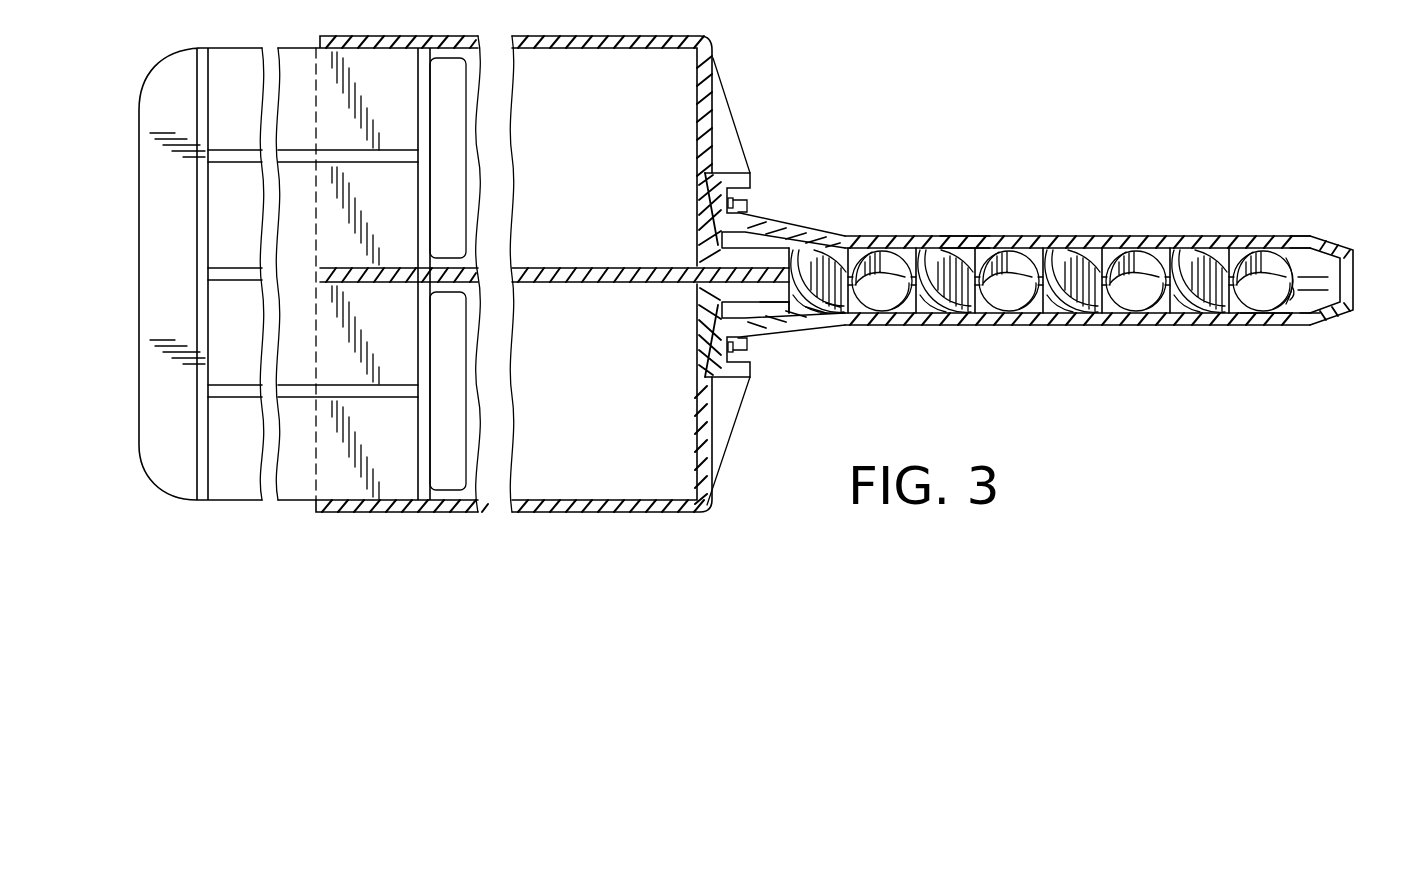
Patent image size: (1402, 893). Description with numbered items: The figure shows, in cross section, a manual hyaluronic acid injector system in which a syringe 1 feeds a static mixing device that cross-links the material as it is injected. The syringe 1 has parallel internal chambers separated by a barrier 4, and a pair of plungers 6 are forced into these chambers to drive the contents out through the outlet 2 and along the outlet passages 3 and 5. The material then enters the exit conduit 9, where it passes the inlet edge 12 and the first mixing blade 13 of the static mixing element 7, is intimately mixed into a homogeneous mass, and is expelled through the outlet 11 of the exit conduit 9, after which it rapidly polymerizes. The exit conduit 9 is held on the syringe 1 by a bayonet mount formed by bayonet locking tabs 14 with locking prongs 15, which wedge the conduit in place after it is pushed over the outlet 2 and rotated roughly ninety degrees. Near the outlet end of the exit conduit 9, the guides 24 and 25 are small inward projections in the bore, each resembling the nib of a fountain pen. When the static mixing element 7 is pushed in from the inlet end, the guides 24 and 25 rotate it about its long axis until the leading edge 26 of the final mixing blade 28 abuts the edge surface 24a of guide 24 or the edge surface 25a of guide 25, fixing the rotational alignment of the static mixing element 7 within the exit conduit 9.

The syringe 1 is at (470, 520).
The outlet 2 is at (793, 306).
The outlet passage 3 is at (770, 252).
The barrier 4 is at (583, 272).
The outlet passage 5 is at (770, 298).
The plungers 6 is at (222, 312).
The static mixing element 7 is at (962, 247).
The exit conduit 9 is at (996, 238).
The outlet 11 is at (1354, 295).
The inlet edge 12 is at (830, 321).
The first mixing blade 13 is at (838, 258).
The bayonet locking tabs 14 is at (752, 178).
The locking prongs 15 is at (746, 197).
The guide 24 is at (1318, 248).
The edge surface 24a is at (1284, 256).
The guide 25 is at (1311, 312).
The edge surface 25a is at (1266, 326).
The leading edge 26 is at (1293, 292).
The final mixing blade 28 is at (1262, 257).